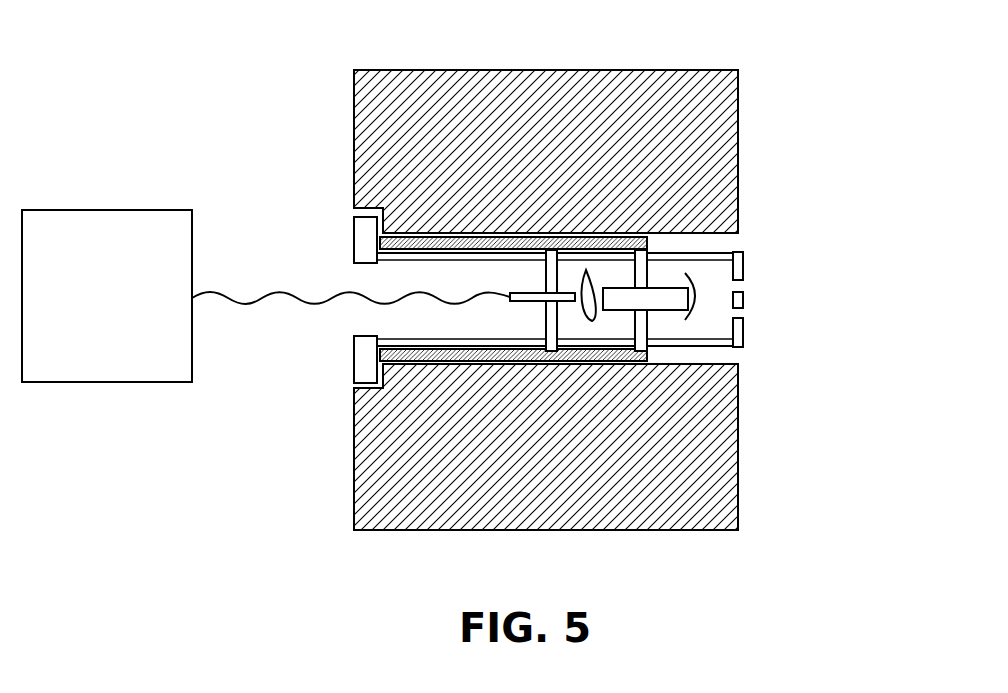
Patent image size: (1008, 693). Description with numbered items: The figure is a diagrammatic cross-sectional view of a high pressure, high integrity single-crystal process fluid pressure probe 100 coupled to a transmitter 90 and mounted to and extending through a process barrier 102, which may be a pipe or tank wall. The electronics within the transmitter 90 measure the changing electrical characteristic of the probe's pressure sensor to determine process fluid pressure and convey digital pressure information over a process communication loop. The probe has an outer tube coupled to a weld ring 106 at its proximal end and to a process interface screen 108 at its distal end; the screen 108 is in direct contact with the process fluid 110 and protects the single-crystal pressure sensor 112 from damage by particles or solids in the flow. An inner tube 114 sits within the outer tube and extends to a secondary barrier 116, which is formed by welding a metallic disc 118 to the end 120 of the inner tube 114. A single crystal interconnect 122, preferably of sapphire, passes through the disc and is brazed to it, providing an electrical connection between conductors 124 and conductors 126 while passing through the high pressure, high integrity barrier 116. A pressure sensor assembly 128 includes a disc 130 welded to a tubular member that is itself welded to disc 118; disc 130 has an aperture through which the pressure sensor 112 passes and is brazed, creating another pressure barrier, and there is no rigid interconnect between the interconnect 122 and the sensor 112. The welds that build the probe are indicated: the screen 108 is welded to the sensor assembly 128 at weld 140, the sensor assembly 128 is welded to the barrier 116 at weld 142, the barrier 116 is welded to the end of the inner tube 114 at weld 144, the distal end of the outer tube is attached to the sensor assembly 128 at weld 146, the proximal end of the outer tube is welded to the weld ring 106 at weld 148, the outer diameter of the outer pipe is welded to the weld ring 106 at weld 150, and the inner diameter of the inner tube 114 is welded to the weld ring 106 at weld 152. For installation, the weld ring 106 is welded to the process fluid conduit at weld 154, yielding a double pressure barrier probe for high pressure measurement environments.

The transmitter 90 is at (107, 296).
The probe 100 is at (313, 336).
The process barrier 102 is at (727, 115).
The weld ring 106 is at (380, 255).
The process interface screen 108 is at (745, 268).
The process fluid 110 is at (795, 130).
The pressure sensor 112 is at (617, 305).
The inner tube 114 is at (450, 345).
The secondary barrier 116 is at (545, 307).
The metallic disc 118 is at (588, 272).
The end of inner tube 120 is at (553, 250).
The single crystal interconnect 122 is at (508, 293).
The conductors 124 is at (362, 296).
The conductors 126 is at (604, 272).
The pressure sensor assembly 128 is at (700, 300).
The disc 130 is at (650, 343).
The weld 140 is at (650, 253).
The weld 142 is at (559, 348).
The weld 144 is at (546, 252).
The weld 146 is at (647, 245).
The weld 148 is at (365, 240).
The weld 150 is at (356, 228).
The weld 152 is at (352, 343).
The weld 154 is at (353, 387).